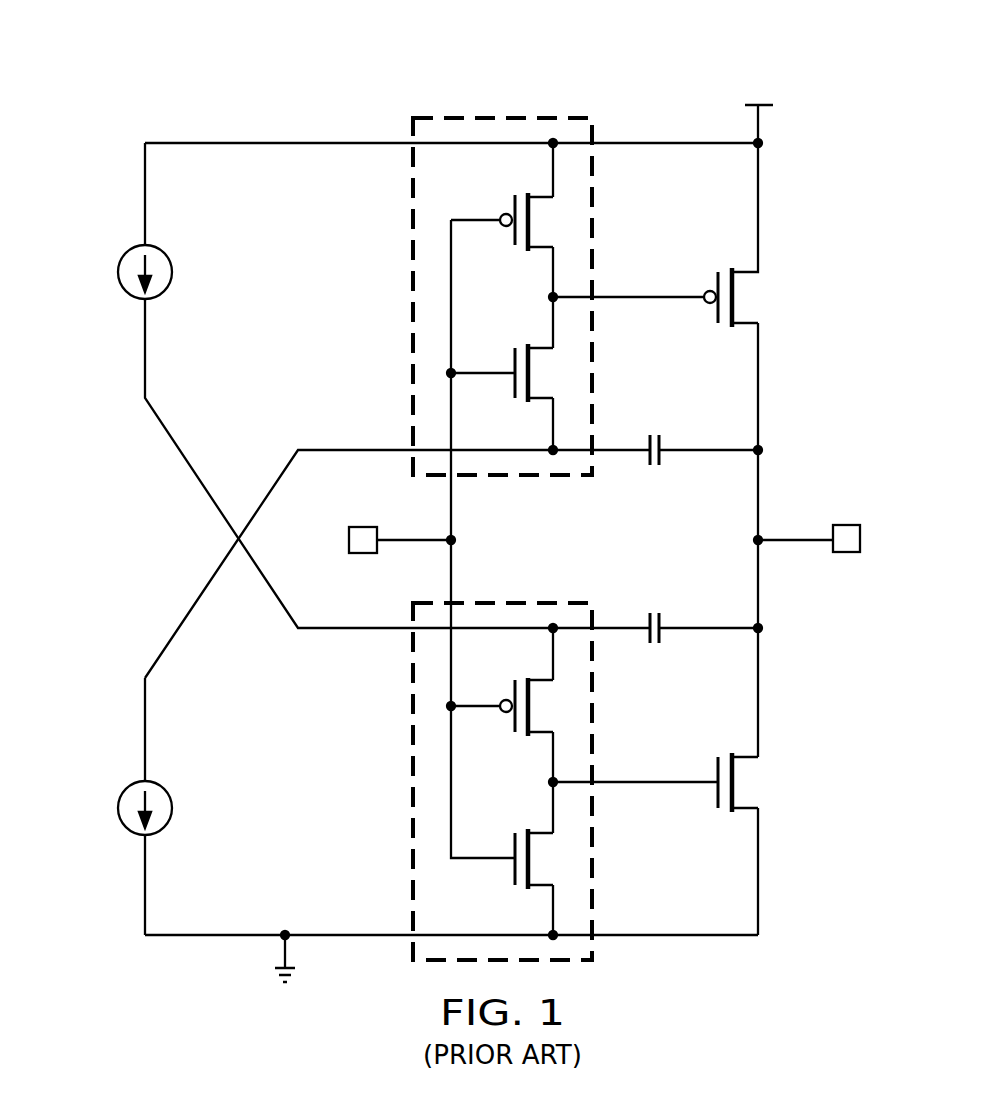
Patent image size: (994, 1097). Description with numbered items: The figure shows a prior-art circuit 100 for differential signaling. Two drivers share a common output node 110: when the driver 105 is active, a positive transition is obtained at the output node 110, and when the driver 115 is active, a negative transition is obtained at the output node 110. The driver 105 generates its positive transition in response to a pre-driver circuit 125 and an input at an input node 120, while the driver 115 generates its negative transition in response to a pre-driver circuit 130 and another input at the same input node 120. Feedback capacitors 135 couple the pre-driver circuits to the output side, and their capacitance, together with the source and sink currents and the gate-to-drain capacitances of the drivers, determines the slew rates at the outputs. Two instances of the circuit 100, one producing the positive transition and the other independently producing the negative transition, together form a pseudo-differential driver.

The circuit 100 is at (250, 62).
The driver 105 is at (712, 283).
The output node 110 is at (848, 525).
The driver 115 is at (718, 795).
The input node 120 is at (362, 525).
The pre-driver circuit 125 is at (400, 246).
The pre-driver circuit 130 is at (400, 832).
The feedback capacitors 135 is at (657, 432).